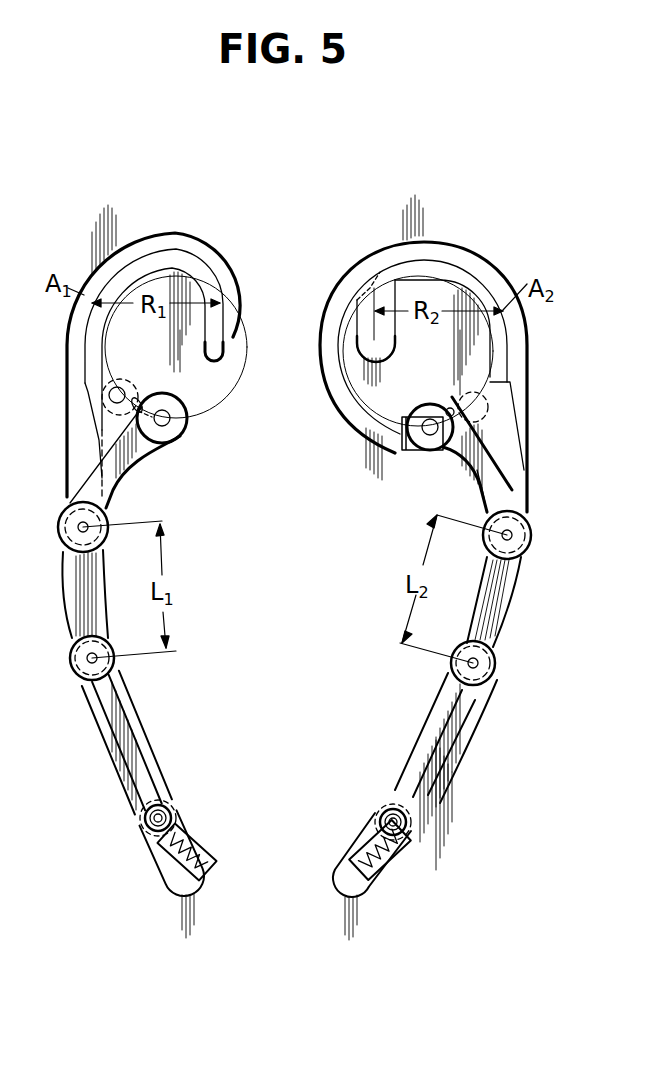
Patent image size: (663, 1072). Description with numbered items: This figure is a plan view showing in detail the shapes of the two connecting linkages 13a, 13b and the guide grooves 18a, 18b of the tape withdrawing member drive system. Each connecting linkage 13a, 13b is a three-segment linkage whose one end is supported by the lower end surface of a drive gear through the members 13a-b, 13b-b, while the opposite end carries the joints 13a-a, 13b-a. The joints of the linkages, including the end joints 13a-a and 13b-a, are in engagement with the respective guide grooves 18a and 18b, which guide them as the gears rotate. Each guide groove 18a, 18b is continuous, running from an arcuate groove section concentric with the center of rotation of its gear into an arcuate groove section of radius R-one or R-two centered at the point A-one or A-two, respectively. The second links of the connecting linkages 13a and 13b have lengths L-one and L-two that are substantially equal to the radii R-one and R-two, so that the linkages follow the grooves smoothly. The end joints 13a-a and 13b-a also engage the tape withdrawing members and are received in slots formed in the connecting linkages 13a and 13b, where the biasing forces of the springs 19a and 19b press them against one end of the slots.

The guide groove 18a is at (158, 243).
The guide groove 18b is at (452, 250).
The three-segment connecting linkage 13a is at (190, 718).
The three-segment connecting linkage 13b is at (440, 718).
The joint 13a-a is at (164, 805).
The joint 13b-a is at (389, 806).
The gear-supported member 13a-b is at (166, 421).
The gear-supported member 13b-b is at (418, 452).
The spring 19a is at (190, 828).
The spring 19b is at (366, 834).